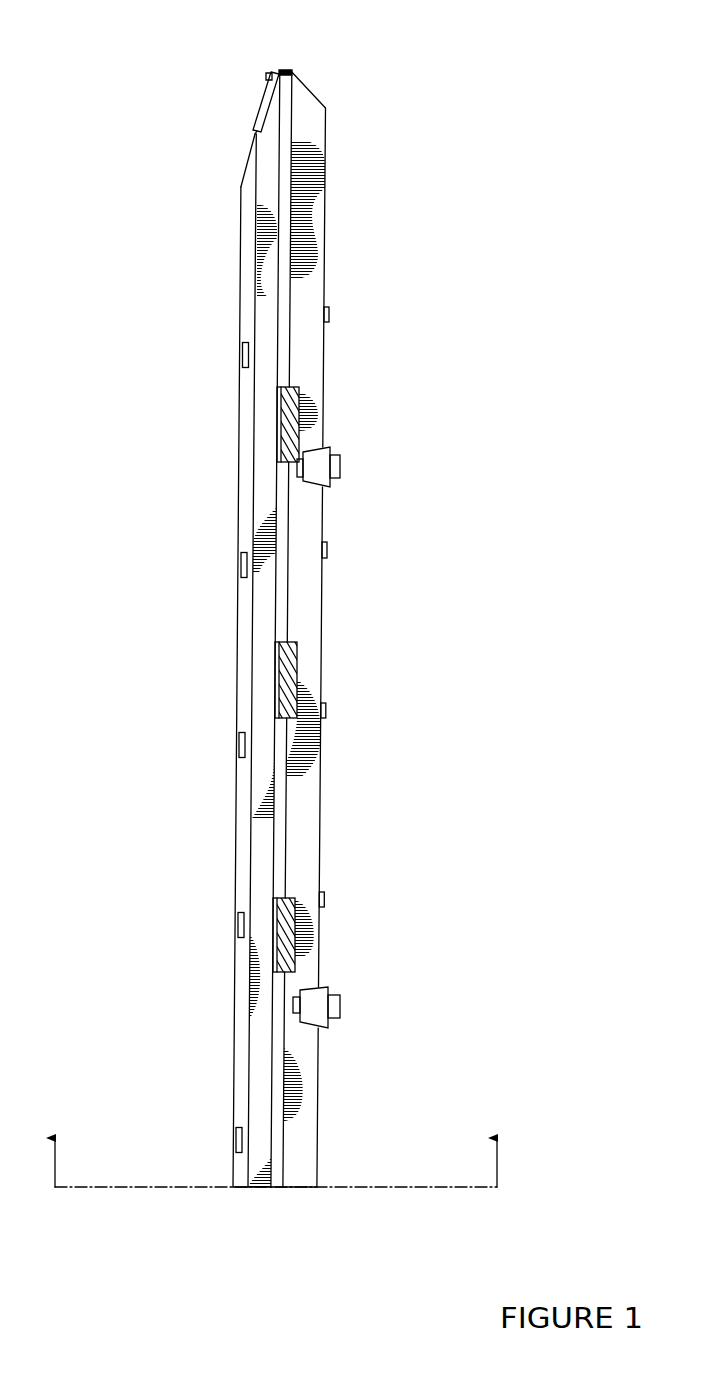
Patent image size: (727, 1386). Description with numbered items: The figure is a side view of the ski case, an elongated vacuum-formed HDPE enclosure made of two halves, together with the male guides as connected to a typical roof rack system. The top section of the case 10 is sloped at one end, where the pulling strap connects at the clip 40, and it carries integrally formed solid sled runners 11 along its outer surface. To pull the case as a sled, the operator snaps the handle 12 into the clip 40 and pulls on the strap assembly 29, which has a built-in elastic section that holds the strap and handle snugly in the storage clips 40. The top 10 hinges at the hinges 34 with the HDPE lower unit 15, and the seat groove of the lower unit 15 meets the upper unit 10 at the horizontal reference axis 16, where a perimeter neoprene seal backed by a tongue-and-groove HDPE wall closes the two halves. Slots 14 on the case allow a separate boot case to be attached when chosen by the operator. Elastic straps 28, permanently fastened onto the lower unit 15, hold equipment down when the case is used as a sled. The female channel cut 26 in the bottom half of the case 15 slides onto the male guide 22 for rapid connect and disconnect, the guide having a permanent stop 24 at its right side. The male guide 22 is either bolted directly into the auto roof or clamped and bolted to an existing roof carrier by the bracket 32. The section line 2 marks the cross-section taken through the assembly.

The section line 2- 2 is at (275, 1140).
The top section of the case 10 is at (268, 238).
The sled runners 11 is at (240, 283).
The handle 12 is at (255, 118).
The slots 14 is at (243, 357).
The lower unit 15 is at (310, 233).
The horizontal reference axis 16 is at (292, 72).
The male guide 22 is at (332, 749).
The permanent stop 24 is at (297, 478).
The female channel cut 26 is at (308, 490).
The elastic straps 28 is at (329, 315).
The strap assembly 29 is at (255, 133).
The bracket 32 is at (340, 453).
The hinges 34 is at (278, 428).
The storage clip 40 is at (263, 98).